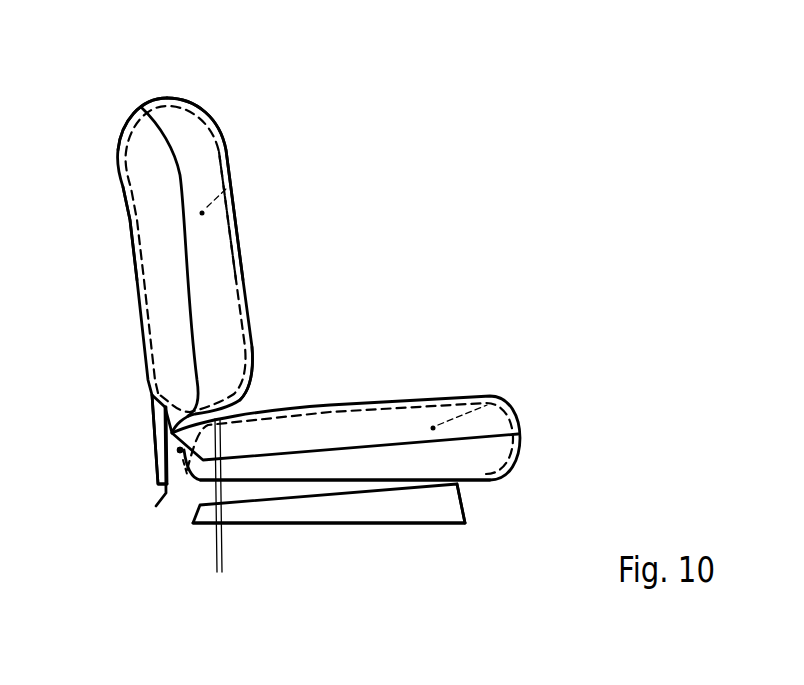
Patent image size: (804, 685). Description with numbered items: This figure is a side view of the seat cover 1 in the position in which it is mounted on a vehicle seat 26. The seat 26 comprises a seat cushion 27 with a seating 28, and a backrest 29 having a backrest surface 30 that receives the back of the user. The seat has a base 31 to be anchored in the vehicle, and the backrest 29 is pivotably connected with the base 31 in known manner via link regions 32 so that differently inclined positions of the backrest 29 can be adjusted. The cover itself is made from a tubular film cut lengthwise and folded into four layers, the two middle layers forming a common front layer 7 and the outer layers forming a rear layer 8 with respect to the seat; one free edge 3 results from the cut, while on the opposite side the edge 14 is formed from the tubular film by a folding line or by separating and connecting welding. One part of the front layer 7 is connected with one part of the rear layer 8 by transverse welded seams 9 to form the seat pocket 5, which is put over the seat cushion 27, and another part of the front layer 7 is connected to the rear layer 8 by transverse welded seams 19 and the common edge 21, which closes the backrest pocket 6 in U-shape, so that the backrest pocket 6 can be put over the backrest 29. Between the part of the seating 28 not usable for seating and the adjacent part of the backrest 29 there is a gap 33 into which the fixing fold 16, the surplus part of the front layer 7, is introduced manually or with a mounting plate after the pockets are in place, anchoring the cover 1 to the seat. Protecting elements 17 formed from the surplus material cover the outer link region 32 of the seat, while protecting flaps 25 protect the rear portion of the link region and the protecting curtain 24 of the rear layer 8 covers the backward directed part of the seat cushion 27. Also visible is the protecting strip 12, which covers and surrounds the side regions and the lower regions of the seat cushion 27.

The seat cover 1 is at (167, 86).
The free edge 3 is at (157, 483).
The seat pocket 5 is at (401, 392).
The backrest pocket 6 is at (223, 141).
The front layer 7 is at (200, 143).
The rear layer 8 is at (160, 220).
The transverse welded seams 9 is at (387, 444).
The protecting strip 12 is at (293, 470).
The edge 14 is at (518, 434).
The fixing fold 16 is at (218, 509).
The protecting elements 17 is at (184, 465).
The transverse welded seams 19 is at (183, 242).
The common edge 21 is at (146, 110).
The protecting curtain 24 is at (152, 423).
The protecting flaps 25 is at (163, 493).
The vehicle seat 26 is at (344, 527).
The seat cushion 27 is at (487, 405).
The seating 28 is at (447, 400).
The backrest 29 is at (230, 187).
The backrest surface 30 is at (232, 213).
The base 31 is at (437, 507).
The link regions 32 is at (178, 455).
The gap 33 is at (251, 399).